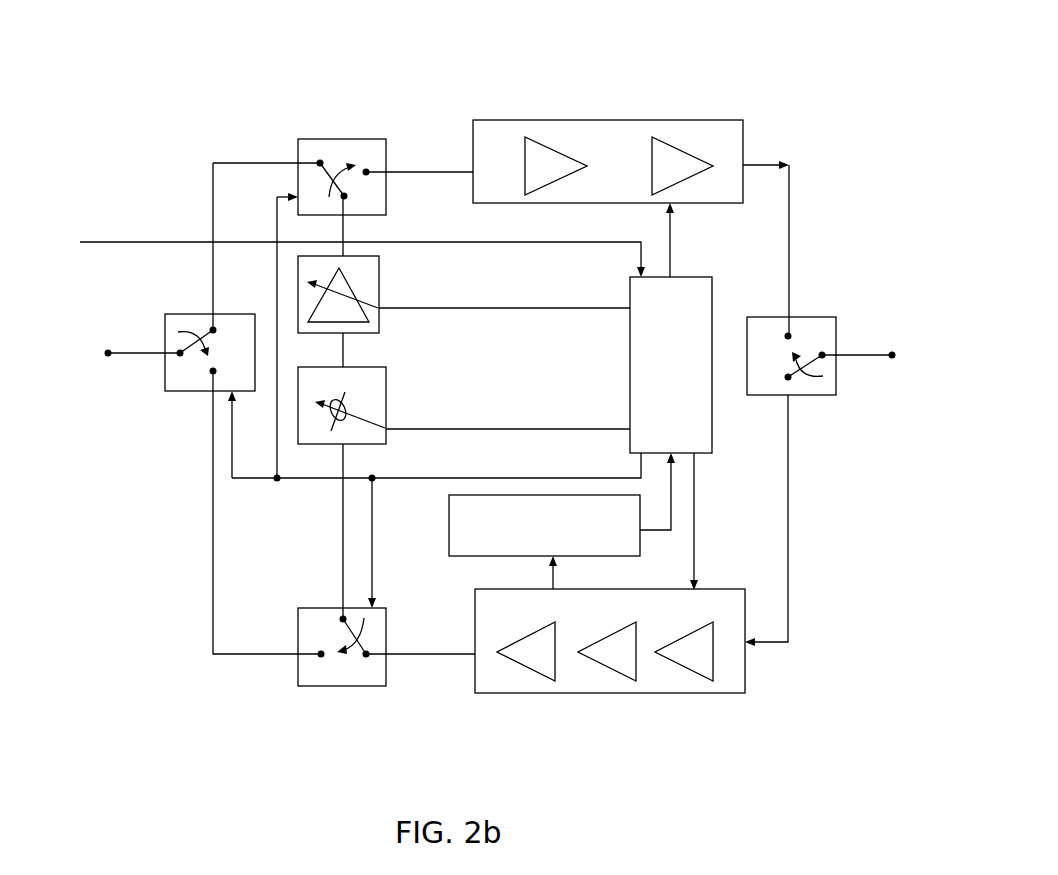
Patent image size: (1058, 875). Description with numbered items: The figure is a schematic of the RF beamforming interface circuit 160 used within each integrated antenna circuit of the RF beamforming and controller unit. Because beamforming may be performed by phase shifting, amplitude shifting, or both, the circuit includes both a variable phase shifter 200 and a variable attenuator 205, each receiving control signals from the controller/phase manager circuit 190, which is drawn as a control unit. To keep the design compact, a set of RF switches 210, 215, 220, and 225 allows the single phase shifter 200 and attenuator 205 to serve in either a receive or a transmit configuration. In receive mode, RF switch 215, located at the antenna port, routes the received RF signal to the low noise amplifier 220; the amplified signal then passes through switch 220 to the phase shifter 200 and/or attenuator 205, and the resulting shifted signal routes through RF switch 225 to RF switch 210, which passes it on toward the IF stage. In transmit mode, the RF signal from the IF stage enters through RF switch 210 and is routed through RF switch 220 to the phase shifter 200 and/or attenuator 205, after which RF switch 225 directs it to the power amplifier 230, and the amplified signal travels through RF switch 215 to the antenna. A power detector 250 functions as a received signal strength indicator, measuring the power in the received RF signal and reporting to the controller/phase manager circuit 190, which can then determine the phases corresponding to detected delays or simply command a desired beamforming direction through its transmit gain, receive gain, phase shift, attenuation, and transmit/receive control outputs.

The RF beamforming interface circuit 160 is at (584, 80).
The power amplifier 230 is at (696, 120).
The RF switch 225 is at (344, 139).
The RF switch 210 is at (175, 314).
The variable attenuator 205 is at (380, 330).
The variable phase shifter 200 is at (307, 445).
The controller/phase manager circuit 190 is at (630, 350).
The power detector 250 is at (448, 530).
The RF switch 215 is at (836, 385).
The low noise amplifier / RF switch 220 is at (343, 688).